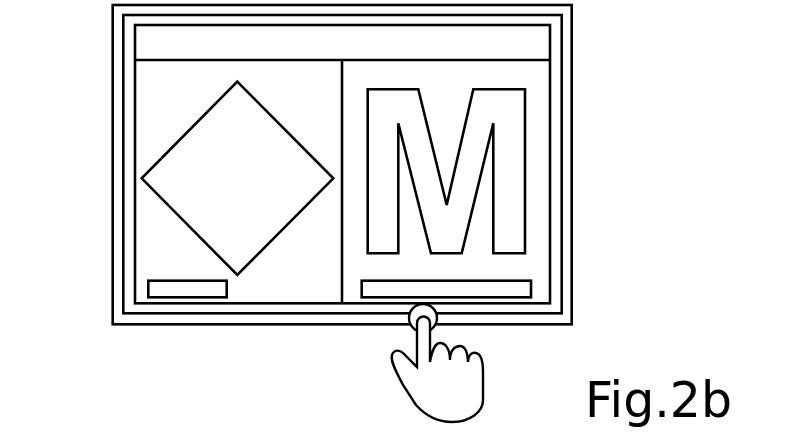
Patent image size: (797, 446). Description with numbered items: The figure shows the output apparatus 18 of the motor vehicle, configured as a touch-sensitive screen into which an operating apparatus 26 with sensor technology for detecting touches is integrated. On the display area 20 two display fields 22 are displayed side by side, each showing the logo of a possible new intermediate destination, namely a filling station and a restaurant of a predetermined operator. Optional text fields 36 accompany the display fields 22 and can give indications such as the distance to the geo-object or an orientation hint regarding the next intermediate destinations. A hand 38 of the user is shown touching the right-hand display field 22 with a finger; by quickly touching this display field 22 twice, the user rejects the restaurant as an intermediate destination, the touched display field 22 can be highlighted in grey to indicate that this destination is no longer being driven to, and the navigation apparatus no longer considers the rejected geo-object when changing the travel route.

The output apparatus 18 is at (406, 164).
The operating apparatus 26 is at (572, 223).
The display area 20 is at (562, 143).
The display field 22 is at (259, 303).
The text field 36 is at (148, 296).
The hand 38 is at (427, 383).